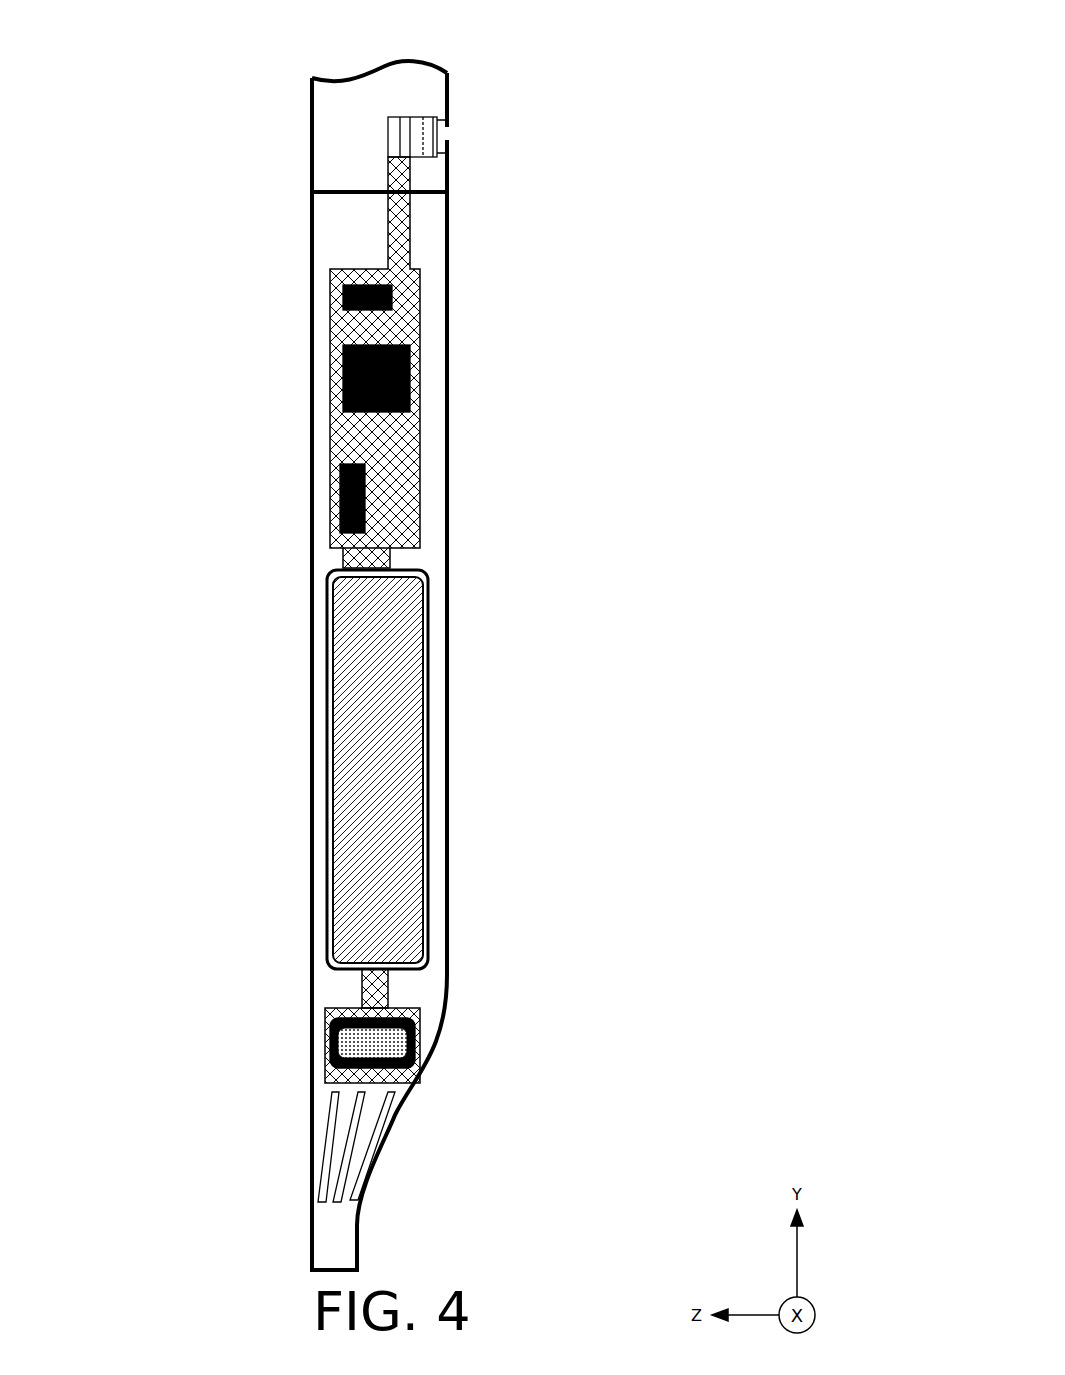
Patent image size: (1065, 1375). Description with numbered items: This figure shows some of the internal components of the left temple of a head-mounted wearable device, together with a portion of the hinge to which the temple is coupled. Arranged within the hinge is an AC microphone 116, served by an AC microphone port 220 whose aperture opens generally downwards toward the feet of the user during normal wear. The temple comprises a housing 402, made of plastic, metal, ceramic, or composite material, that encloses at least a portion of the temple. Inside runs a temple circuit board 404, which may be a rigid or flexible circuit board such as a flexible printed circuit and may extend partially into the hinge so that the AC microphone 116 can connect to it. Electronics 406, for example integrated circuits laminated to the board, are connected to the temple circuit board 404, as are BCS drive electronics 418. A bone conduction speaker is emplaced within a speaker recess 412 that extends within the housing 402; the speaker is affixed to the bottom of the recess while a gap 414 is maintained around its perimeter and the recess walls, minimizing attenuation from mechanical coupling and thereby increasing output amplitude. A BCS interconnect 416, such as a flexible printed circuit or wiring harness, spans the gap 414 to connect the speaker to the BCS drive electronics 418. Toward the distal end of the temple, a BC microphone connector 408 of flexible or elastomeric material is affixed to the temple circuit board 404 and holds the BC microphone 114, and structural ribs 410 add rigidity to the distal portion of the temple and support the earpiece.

The housing 402 is at (313, 300).
The AC microphone 116 is at (423, 118).
The AC microphone port 220 is at (458, 139).
The temple circuit board 404 is at (330, 400).
The electronics 406 is at (397, 377).
The BCS drive electronics 418 is at (363, 500).
The BCS interconnect 416 is at (353, 560).
The speaker recess 412 is at (328, 740).
The gap 414 is at (324, 802).
The BC microphone connector 408 is at (353, 1018).
The BC microphone 114 is at (378, 1045).
The structural ribs 410 is at (327, 1148).